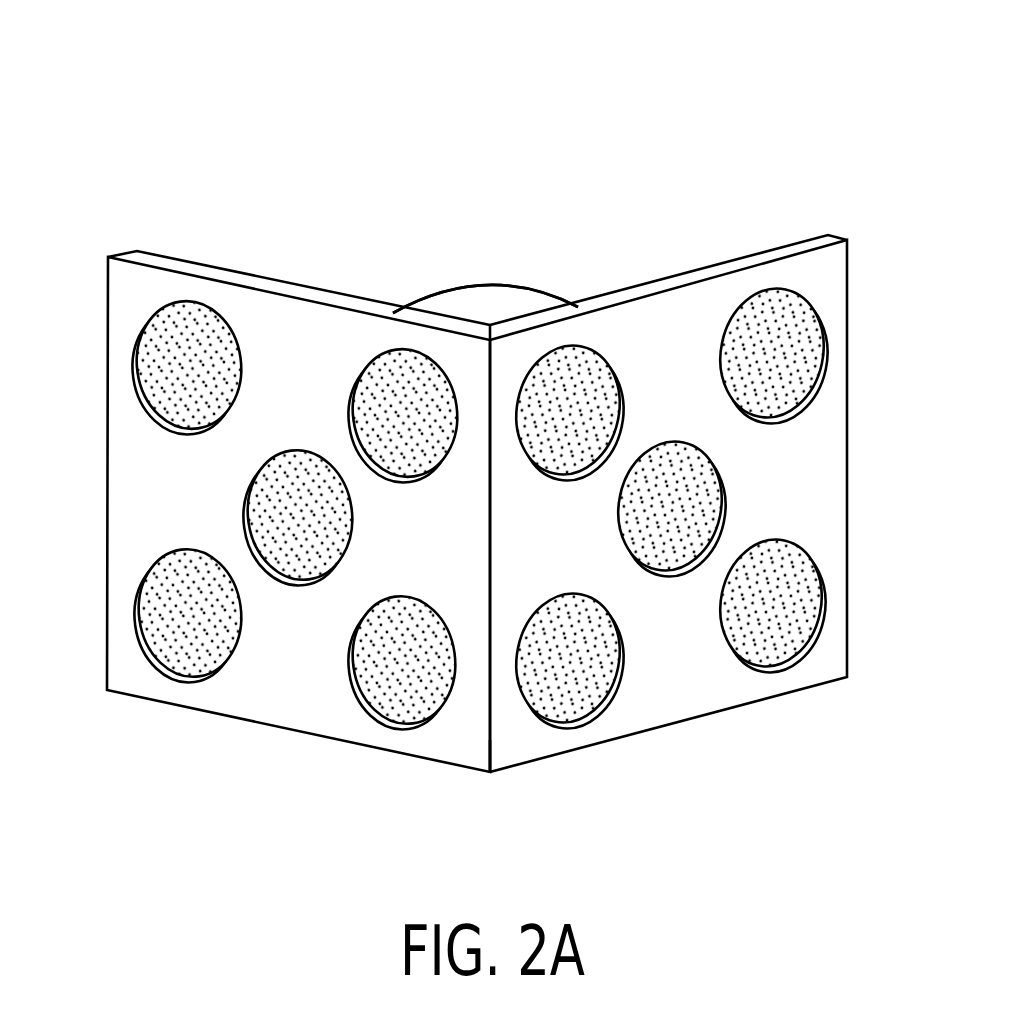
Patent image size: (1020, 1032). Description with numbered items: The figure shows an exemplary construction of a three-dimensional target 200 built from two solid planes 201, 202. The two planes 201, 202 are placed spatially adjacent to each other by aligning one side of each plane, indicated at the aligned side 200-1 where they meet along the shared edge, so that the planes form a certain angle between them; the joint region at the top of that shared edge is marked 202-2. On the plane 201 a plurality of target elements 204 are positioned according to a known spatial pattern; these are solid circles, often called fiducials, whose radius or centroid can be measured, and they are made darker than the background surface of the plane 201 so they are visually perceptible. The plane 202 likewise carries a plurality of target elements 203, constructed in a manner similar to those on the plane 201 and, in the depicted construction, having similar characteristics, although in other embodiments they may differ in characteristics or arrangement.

The three-dimensional target 200 is at (488, 100).
The aligned side of the planes 200-1 is at (488, 757).
The top hinge joint 202-2 is at (440, 292).
The plane 201 is at (283, 713).
The plane 202 is at (683, 707).
The target elements 203 is at (813, 307).
The target elements 204 is at (140, 327).